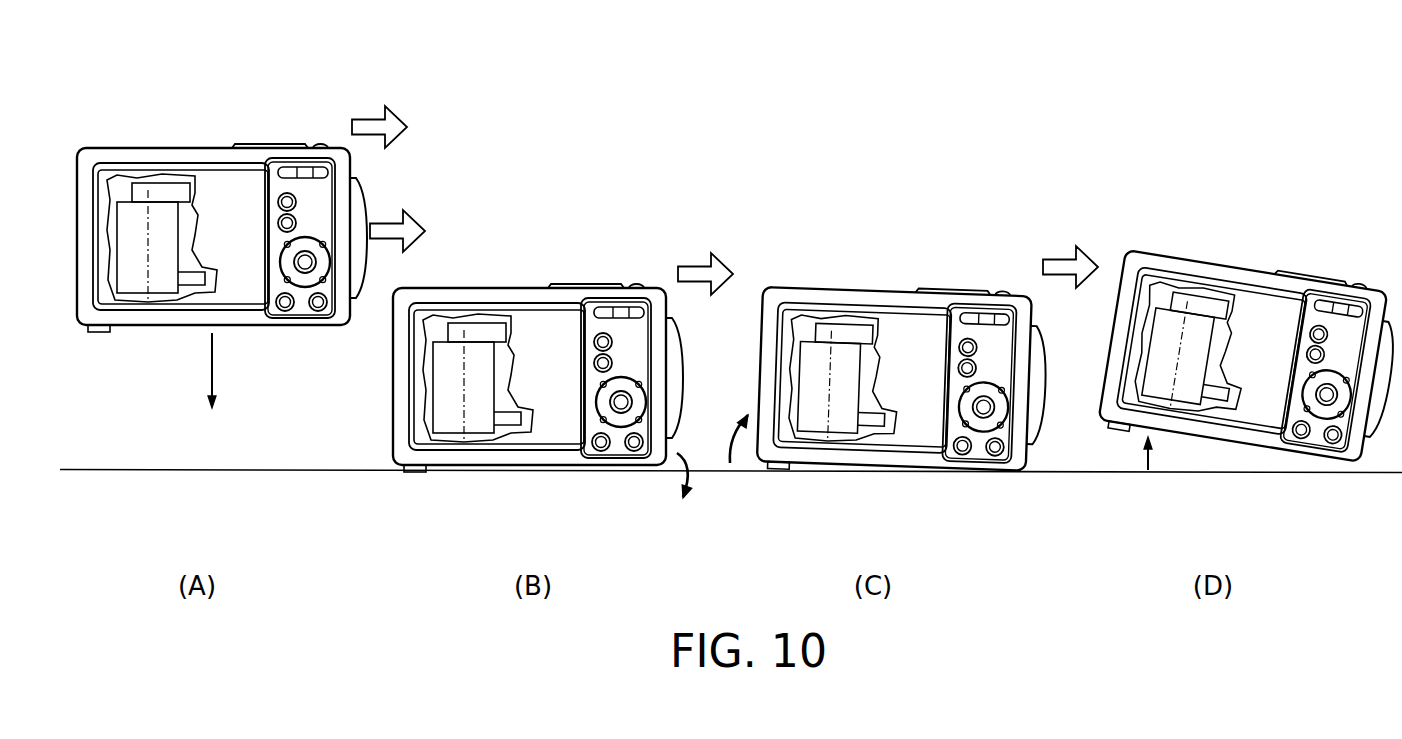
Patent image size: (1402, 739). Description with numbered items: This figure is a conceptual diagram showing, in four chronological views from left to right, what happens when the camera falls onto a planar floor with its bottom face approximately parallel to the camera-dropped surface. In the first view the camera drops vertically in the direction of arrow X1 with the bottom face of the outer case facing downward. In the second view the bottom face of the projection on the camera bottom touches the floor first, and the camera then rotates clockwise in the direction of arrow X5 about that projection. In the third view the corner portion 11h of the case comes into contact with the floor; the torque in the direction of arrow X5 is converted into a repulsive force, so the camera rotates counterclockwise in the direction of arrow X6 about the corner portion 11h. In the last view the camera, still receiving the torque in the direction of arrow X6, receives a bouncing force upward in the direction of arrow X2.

The corner portion 11h is at (1017, 478).
The arrow X1 is at (212, 360).
The arrow X2 is at (1142, 458).
The arrow X5 is at (677, 453).
The arrow X6 is at (723, 464).